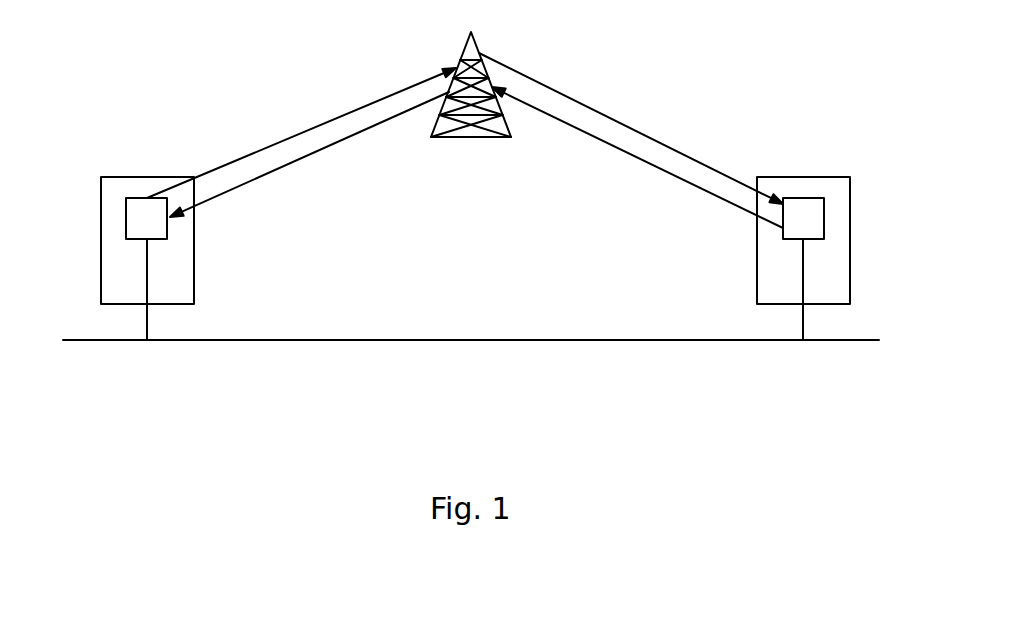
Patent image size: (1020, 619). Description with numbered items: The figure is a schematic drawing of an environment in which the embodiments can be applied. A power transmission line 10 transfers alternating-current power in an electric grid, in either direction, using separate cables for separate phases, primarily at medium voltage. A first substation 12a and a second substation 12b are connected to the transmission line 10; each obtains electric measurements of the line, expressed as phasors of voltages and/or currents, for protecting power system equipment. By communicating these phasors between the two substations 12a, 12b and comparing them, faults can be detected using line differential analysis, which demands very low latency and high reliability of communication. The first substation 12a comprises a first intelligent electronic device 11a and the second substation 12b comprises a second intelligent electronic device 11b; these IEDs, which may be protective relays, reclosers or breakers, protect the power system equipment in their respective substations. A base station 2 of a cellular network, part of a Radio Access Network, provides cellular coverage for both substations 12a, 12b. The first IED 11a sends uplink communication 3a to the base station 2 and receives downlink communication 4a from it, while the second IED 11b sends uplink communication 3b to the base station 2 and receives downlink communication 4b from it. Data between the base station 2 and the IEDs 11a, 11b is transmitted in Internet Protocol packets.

The base station 2 is at (510, 127).
The uplink communication 3a is at (290, 135).
The uplink communication 3b is at (622, 147).
The downlink communication 4a is at (290, 167).
The downlink communication 4b is at (577, 98).
The power transmission line 10 is at (542, 340).
The first intelligent electronic device 11a is at (168, 232).
The second intelligent electronic device 11b is at (823, 223).
The first substation 12a is at (122, 177).
The second substation 12b is at (815, 177).